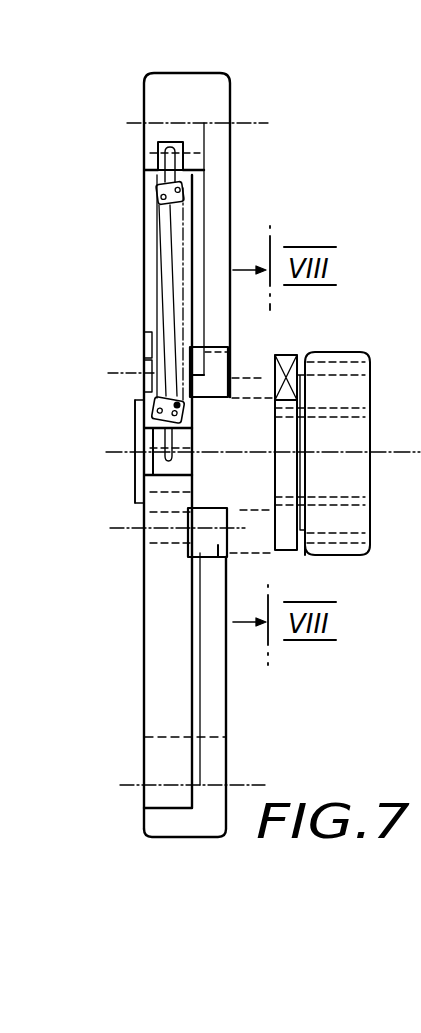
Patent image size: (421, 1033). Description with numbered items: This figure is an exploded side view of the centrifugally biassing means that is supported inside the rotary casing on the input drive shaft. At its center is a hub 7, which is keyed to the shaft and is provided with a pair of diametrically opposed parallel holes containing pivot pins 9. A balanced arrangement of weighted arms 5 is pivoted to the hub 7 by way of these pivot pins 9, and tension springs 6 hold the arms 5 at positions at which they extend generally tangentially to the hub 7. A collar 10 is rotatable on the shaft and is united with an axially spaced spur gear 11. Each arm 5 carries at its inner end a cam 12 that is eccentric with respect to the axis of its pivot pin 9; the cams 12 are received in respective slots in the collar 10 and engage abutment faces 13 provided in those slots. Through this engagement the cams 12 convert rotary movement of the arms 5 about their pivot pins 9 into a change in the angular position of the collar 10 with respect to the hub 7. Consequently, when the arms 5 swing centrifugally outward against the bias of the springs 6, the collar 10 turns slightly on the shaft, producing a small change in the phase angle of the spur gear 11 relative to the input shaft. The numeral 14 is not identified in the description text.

The weighted arms 5 is at (222, 195).
The tension springs 6 is at (158, 268).
The hub 7 is at (150, 345).
The pivot pins 9 is at (145, 366).
The collar 10 is at (287, 550).
The spur gear 11 is at (350, 548).
The cam 12 is at (218, 386).
The abutment faces 13 is at (283, 353).
The hub bore 14 is at (355, 428).